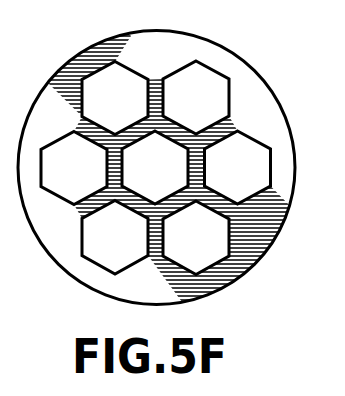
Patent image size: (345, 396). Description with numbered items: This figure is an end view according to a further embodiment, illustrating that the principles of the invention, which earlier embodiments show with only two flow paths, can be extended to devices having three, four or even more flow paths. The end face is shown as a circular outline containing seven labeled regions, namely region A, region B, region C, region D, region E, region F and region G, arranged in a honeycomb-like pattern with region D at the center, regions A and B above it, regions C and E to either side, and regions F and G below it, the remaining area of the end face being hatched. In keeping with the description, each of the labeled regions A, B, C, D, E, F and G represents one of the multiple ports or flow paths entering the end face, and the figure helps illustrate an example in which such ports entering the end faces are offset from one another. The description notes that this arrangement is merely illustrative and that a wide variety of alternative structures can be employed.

The hexagonal cell A is at (115, 98).
The hexagonal cell B is at (196, 97).
The hexagonal cell C is at (74, 168).
The hexagonal cell D is at (155, 167).
The hexagonal cell E is at (238, 167).
The hexagonal cell F is at (115, 238).
The hexagonal cell G is at (196, 238).